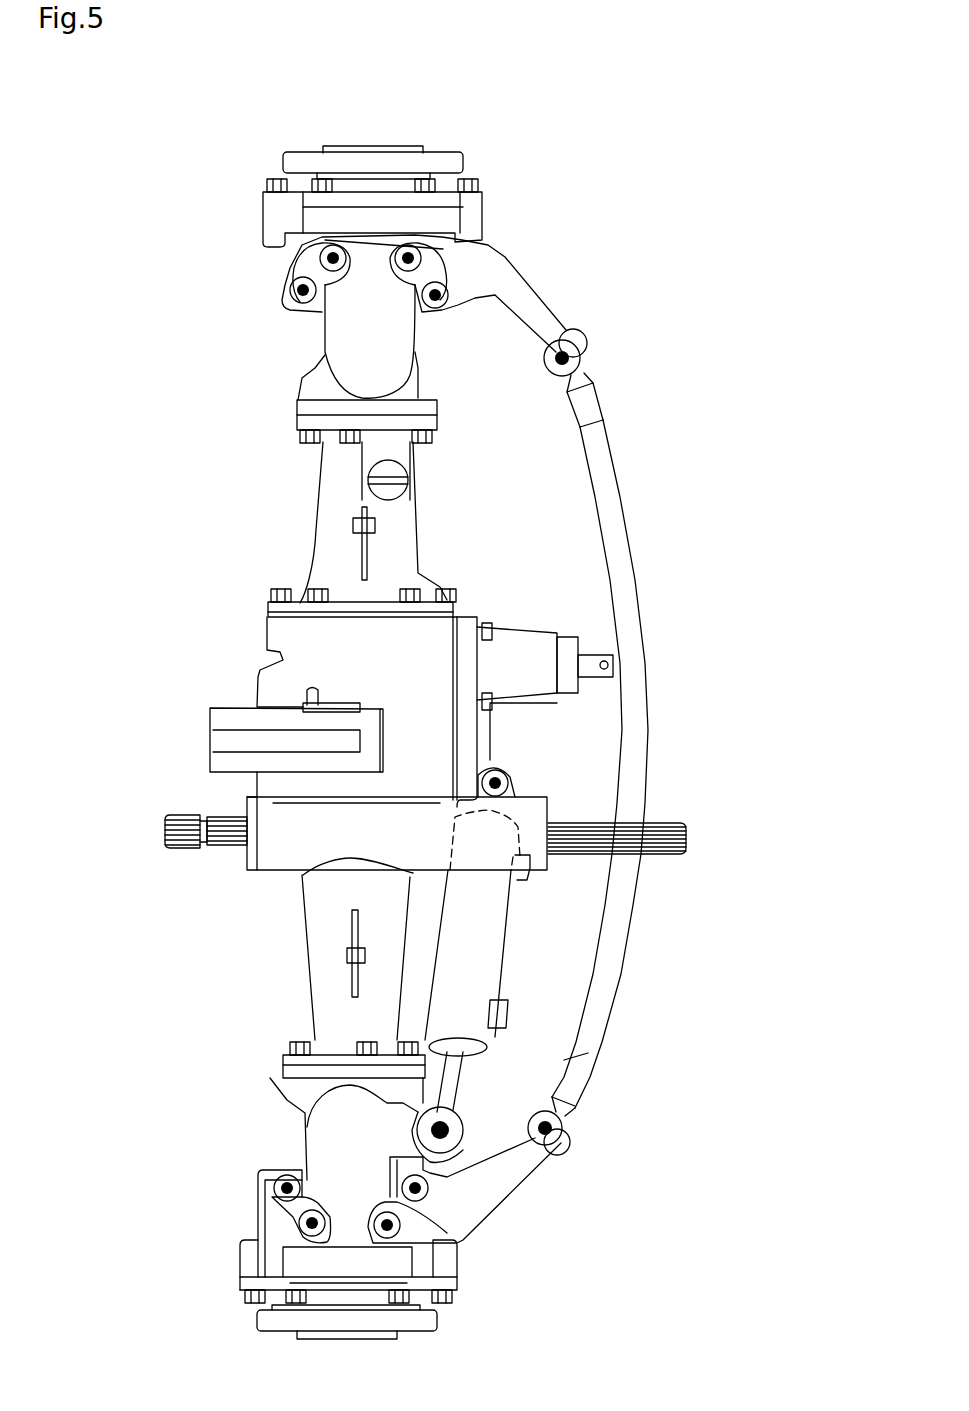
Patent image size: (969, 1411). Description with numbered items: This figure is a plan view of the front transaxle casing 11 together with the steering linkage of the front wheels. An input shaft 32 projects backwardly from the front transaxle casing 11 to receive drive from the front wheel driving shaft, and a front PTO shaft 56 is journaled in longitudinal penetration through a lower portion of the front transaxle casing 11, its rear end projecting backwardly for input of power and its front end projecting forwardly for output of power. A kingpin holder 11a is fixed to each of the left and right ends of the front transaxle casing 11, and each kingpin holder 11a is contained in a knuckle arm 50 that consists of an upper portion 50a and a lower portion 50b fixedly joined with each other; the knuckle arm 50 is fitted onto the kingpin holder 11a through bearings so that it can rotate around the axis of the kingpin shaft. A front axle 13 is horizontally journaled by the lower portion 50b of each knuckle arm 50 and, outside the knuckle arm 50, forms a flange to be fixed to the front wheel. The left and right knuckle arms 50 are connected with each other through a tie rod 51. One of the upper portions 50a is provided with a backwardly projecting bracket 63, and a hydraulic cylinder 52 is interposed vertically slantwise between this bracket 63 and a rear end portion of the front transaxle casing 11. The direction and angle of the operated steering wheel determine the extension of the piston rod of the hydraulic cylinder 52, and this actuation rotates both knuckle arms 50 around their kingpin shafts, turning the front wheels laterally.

The front axle 13 is at (330, 149).
The knuckle arm 50 is at (573, 292).
The upper portion 50a is at (330, 320).
The lower portion 50b is at (267, 1227).
The front transaxle casing 11 is at (320, 573).
The kingpin holder 11a is at (305, 402).
The input shaft 32 is at (615, 669).
The front PTO shaft 56 is at (686, 841).
The tie rod 51 is at (607, 936).
The hydraulic cylinder 52 is at (500, 974).
The bracket 63 is at (466, 1127).